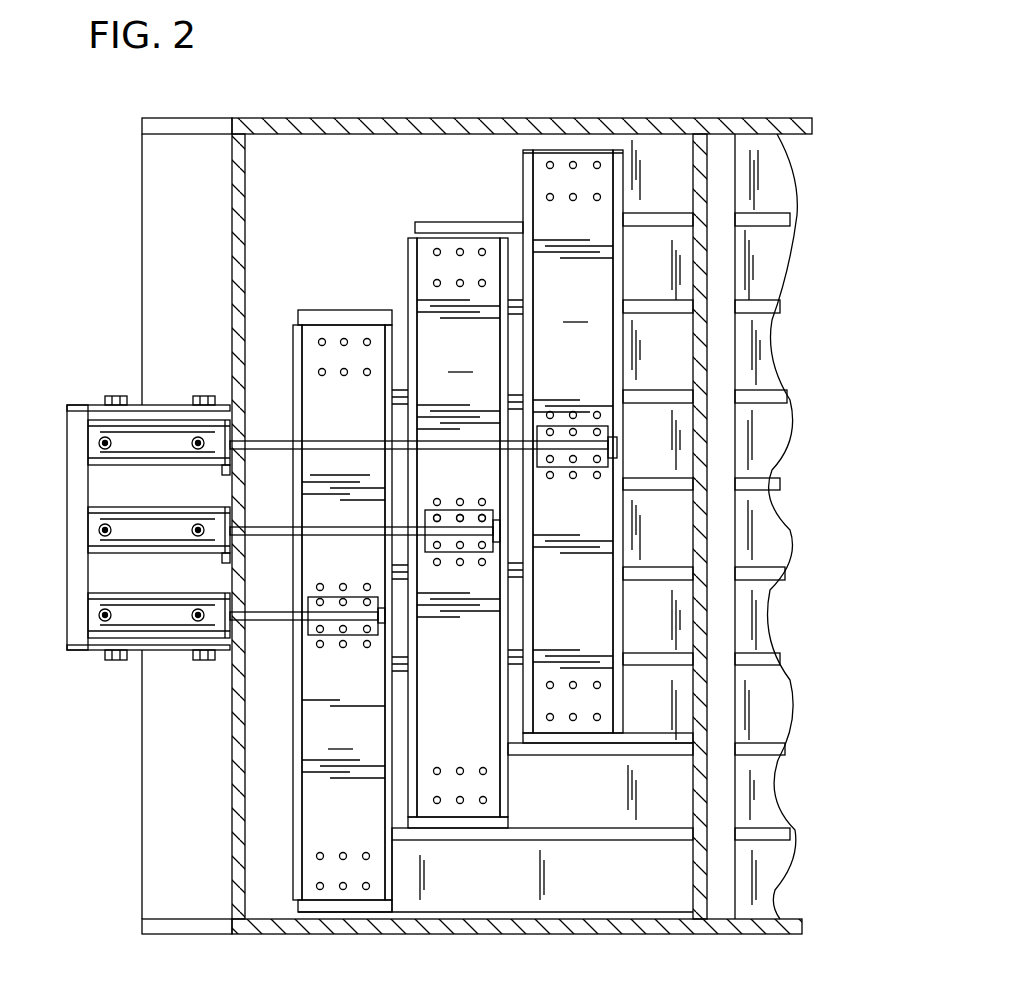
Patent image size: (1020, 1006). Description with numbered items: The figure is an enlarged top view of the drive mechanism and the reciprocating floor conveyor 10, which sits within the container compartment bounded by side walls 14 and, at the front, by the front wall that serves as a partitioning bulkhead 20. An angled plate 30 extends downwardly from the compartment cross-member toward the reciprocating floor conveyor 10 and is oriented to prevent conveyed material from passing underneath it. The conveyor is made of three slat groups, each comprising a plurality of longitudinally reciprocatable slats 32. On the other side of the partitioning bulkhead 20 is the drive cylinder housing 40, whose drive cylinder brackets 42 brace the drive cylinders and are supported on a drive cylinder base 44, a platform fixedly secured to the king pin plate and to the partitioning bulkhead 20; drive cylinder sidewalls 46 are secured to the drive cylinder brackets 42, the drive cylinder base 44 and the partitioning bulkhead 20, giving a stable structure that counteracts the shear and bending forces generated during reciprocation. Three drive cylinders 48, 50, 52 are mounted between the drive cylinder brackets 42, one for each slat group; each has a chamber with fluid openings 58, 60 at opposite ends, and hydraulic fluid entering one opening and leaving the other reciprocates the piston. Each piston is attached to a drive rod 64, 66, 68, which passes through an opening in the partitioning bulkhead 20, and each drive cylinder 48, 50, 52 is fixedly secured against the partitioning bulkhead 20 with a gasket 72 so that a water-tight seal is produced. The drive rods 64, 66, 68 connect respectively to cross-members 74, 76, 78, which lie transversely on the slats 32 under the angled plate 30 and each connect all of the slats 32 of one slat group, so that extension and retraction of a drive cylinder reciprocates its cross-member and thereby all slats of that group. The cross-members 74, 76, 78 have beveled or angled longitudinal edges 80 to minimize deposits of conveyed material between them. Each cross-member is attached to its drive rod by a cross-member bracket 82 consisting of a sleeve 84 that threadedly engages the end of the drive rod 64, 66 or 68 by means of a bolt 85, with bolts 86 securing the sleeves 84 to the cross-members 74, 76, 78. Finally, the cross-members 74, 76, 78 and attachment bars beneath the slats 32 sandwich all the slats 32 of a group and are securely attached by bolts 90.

The reciprocating floor conveyor 10 is at (758, 160).
The side walls 14 is at (427, 118).
The partitioning bulkhead 20 is at (248, 172).
The angled plate 30 is at (723, 142).
The slats 32 is at (775, 138).
The drive cylinder housing 40 is at (124, 512).
The drive cylinder brackets 42 is at (207, 395).
The drive cylinder base 44 is at (80, 660).
The drive cylinder sidewalls 46 is at (72, 403).
The drive cylinder 48 is at (98, 604).
The drive cylinder 50 is at (98, 515).
The drive cylinder 52 is at (124, 419).
The fluid opening 58 is at (95, 440).
The fluid opening 60 is at (197, 437).
The drive rod 64 is at (258, 612).
The drive rod 66 is at (258, 527).
The drive rod 68 is at (258, 440).
The gasket 72 is at (225, 478).
The cross-member 74 is at (345, 611).
The cross-member 76 is at (465, 525).
The cross-member 78 is at (573, 441).
The longitudinal edges 80 is at (523, 170).
The cross-member bracket 82 is at (572, 470).
The sleeve 84 is at (326, 612).
The bolt 85 is at (385, 616).
The bolts 86 is at (482, 514).
The bolts 90 is at (482, 248).